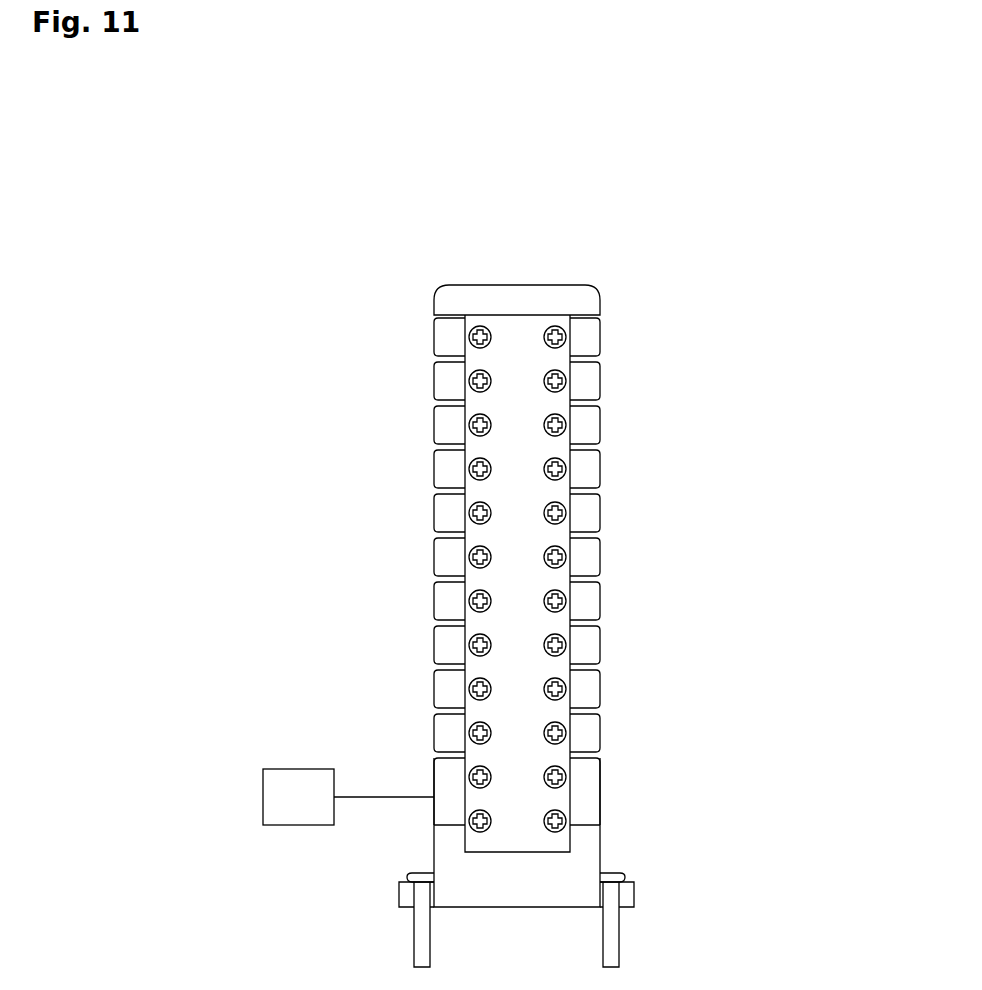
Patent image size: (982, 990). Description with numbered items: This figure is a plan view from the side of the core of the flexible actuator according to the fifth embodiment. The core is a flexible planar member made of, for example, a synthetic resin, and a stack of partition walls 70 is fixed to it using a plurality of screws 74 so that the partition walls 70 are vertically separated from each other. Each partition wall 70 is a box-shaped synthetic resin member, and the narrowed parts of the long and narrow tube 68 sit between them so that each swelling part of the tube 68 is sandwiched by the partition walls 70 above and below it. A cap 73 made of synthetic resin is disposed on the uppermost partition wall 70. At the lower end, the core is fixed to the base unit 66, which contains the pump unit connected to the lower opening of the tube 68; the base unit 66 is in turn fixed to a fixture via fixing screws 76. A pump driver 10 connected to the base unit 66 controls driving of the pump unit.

The cap 73 is at (543, 296).
The partition walls 70 is at (590, 378).
The tube 68 is at (490, 541).
The screws 74 is at (468, 690).
The pump driver 10 is at (263, 797).
The base unit 66 is at (575, 864).
The fixing screws 76 is at (420, 940).